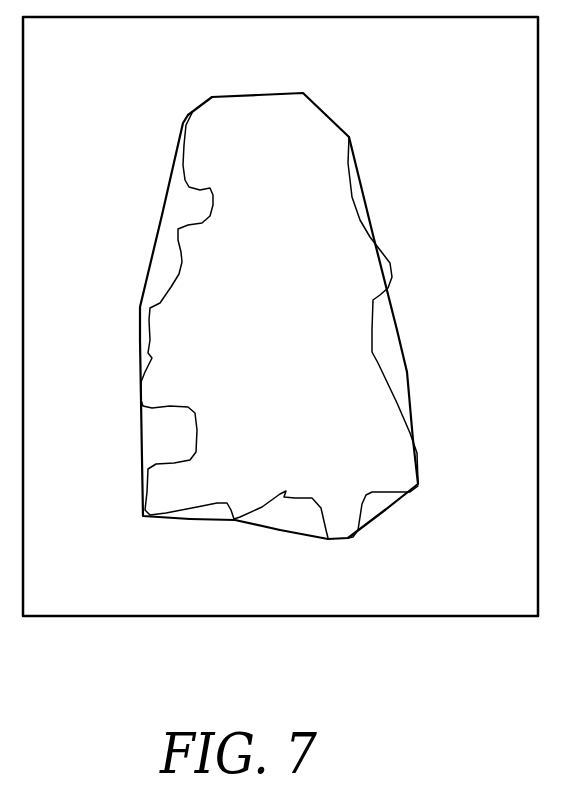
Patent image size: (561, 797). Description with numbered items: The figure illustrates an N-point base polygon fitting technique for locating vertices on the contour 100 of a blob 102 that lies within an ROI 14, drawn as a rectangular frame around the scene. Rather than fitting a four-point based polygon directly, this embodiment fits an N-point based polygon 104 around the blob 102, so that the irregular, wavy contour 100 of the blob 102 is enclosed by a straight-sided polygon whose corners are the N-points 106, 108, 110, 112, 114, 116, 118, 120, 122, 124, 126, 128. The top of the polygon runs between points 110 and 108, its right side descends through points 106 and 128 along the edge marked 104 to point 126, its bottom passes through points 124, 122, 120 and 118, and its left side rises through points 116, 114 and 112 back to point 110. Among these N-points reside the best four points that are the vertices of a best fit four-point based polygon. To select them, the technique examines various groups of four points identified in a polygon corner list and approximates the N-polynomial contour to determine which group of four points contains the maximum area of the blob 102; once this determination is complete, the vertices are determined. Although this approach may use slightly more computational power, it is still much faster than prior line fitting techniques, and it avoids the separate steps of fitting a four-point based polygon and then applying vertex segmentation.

The ROI 14 is at (284, 319).
The contour 100 is at (177, 228).
The blob 102 is at (280, 325).
The N-point based polygon 104 is at (404, 360).
The N-point 106 is at (349, 137).
The N-point 108 is at (303, 93).
The N-point 110 is at (212, 97).
The N-point 112 is at (183, 123).
The N-point 114 is at (150, 307).
The N-point 116 is at (141, 400).
The N-point 118 is at (150, 520).
The N-point 120 is at (235, 520).
The N-point 122 is at (328, 539).
The N-point 124 is at (355, 538).
The N-point 126 is at (418, 484).
The N-point 128 is at (390, 264).